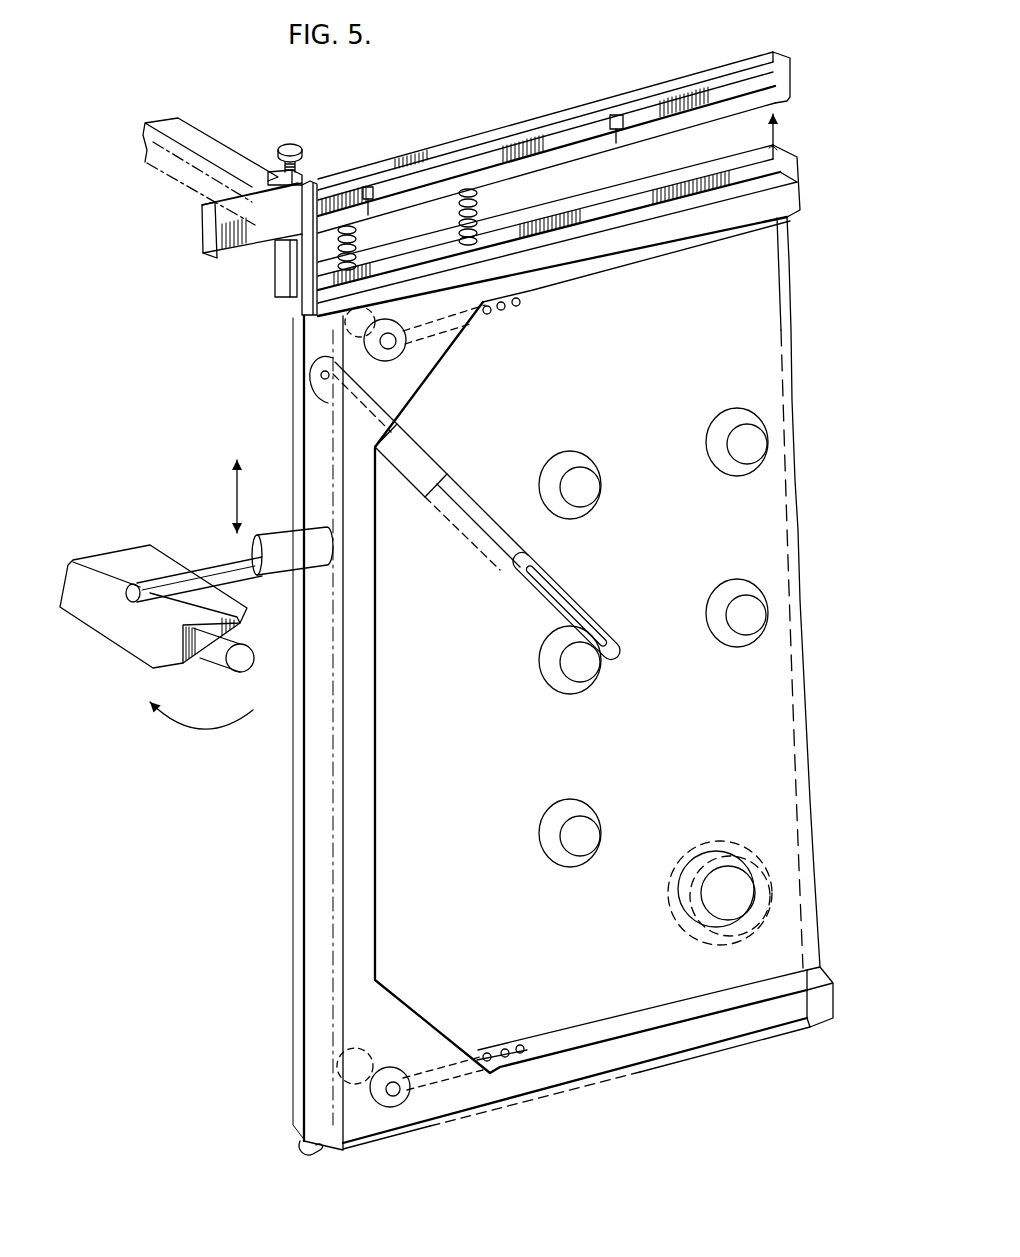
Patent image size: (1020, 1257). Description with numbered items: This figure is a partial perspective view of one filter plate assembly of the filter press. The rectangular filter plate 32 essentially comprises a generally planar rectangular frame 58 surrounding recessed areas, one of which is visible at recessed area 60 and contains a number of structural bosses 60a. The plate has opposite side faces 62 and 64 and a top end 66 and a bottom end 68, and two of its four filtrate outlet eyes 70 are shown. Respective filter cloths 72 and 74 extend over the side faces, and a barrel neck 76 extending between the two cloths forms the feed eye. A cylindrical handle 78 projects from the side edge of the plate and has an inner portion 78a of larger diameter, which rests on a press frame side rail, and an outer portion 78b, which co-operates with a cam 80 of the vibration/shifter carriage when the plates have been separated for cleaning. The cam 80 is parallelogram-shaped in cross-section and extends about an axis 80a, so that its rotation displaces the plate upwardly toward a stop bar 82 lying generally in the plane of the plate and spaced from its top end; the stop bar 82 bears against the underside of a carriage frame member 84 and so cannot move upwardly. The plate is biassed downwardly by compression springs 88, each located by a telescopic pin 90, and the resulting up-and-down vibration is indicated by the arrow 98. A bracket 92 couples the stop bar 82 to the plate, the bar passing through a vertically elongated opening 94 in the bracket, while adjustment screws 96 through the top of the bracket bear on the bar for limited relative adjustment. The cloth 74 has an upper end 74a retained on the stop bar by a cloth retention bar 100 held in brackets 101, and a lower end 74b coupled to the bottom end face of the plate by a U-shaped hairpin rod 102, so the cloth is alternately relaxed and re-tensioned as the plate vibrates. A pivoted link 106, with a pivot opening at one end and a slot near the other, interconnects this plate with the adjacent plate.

The filter plate 32 is at (300, 959).
The frame 58 is at (357, 793).
The recessed area 60 is at (385, 856).
The structural bosses 60a is at (738, 440).
The side face 62 is at (292, 1021).
The side face 64 is at (350, 1000).
The top end 66 is at (815, 171).
The bottom end 68 is at (829, 1031).
The filtrate outlet eyes 70 is at (441, 359).
The filter cloth 72 is at (815, 843).
The filter cloth 74 is at (797, 783).
The upper end 74a is at (784, 118).
The lower end 74b is at (323, 1153).
The barrel neck 76 is at (762, 907).
The handle 78 is at (279, 516).
The inner portion 78a is at (332, 550).
The outer portion 78b is at (200, 562).
The cam 80 is at (140, 540).
The axis 80a is at (250, 668).
The stop bar 82 is at (739, 65).
The frame member 84 is at (158, 172).
The compression springs 88 is at (498, 158).
The pin 90 is at (388, 254).
The bracket 92 is at (281, 300).
The vertically elongated opening 94 is at (273, 254).
The adjustment screws 96 is at (290, 143).
The arrow 98 is at (352, 268).
The cloth retention bar 100 is at (672, 100).
The brackets 101 is at (612, 114).
The hairpin rod 102 is at (296, 1158).
The pivoted link 106 is at (430, 452).